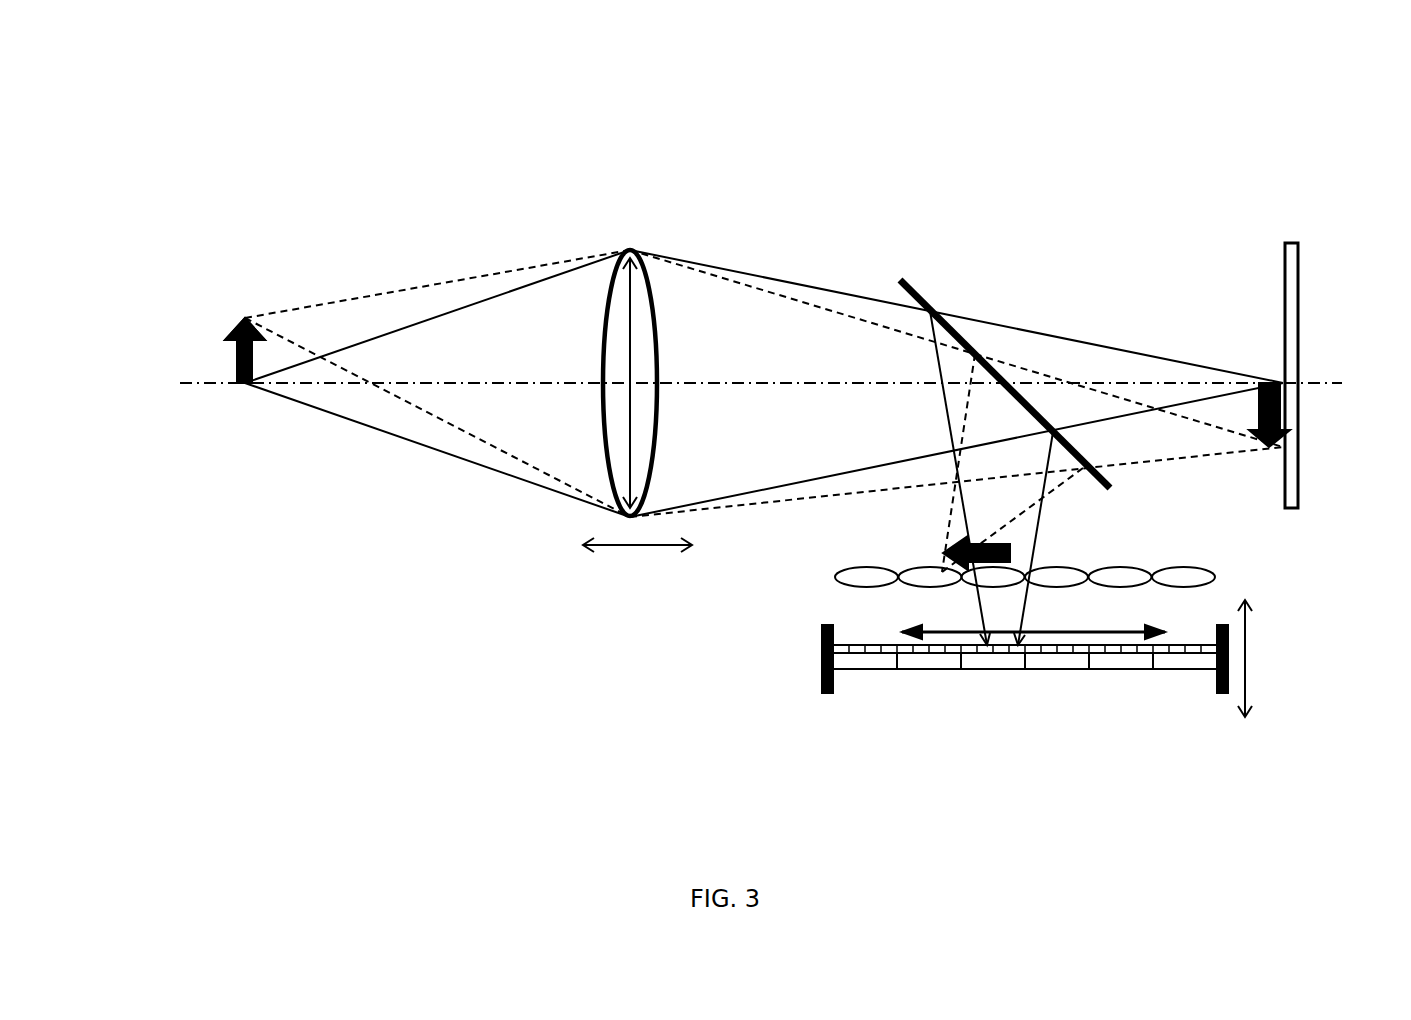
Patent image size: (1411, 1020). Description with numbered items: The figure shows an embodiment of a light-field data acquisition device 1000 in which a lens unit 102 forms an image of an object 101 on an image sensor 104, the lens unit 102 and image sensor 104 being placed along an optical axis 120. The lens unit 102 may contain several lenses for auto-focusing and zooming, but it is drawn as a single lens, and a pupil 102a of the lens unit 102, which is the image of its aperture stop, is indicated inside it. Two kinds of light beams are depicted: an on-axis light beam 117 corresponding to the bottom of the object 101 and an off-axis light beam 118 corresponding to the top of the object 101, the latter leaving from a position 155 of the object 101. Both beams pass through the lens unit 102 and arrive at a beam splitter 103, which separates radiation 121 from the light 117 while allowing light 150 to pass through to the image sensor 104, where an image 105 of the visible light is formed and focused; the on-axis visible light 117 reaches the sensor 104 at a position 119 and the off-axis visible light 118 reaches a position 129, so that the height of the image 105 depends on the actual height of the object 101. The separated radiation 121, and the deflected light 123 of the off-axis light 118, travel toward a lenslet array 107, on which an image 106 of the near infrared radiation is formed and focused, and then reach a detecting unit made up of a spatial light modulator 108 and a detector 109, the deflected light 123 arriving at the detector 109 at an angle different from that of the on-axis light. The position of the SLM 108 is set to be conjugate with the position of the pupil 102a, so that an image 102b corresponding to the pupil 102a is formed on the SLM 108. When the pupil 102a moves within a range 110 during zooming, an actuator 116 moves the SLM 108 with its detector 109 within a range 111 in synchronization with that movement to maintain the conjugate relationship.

The light-field data acquisition device 1000 is at (362, 83).
The object 101 is at (236, 347).
The position of the object 155 is at (247, 318).
The lens unit 102 is at (643, 283).
The pupil of the lens unit 102a is at (633, 338).
The image of the pupil 102b is at (1063, 628).
The range 110 is at (620, 553).
The on-axis light beam 117 is at (297, 402).
The off-axis light beam 118 is at (427, 288).
The optical axis 120 is at (436, 383).
The light passing through the beam splitter 150 is at (1092, 340).
The position on the sensor 119 is at (1282, 382).
The position on the sensor 129 is at (1283, 447).
The beam splitter 103 is at (917, 285).
The image sensor 104 is at (1297, 243).
The image 105 is at (1280, 423).
The radiation 121 is at (953, 390).
The deflected light 123 is at (957, 495).
The image of the near infrared radiation 106 is at (943, 543).
The lenslet array 107 is at (842, 580).
The spatial light modulator 108 is at (1172, 645).
The detector 109 is at (1013, 663).
The actuator 116 is at (823, 690).
The range 111 is at (1252, 670).